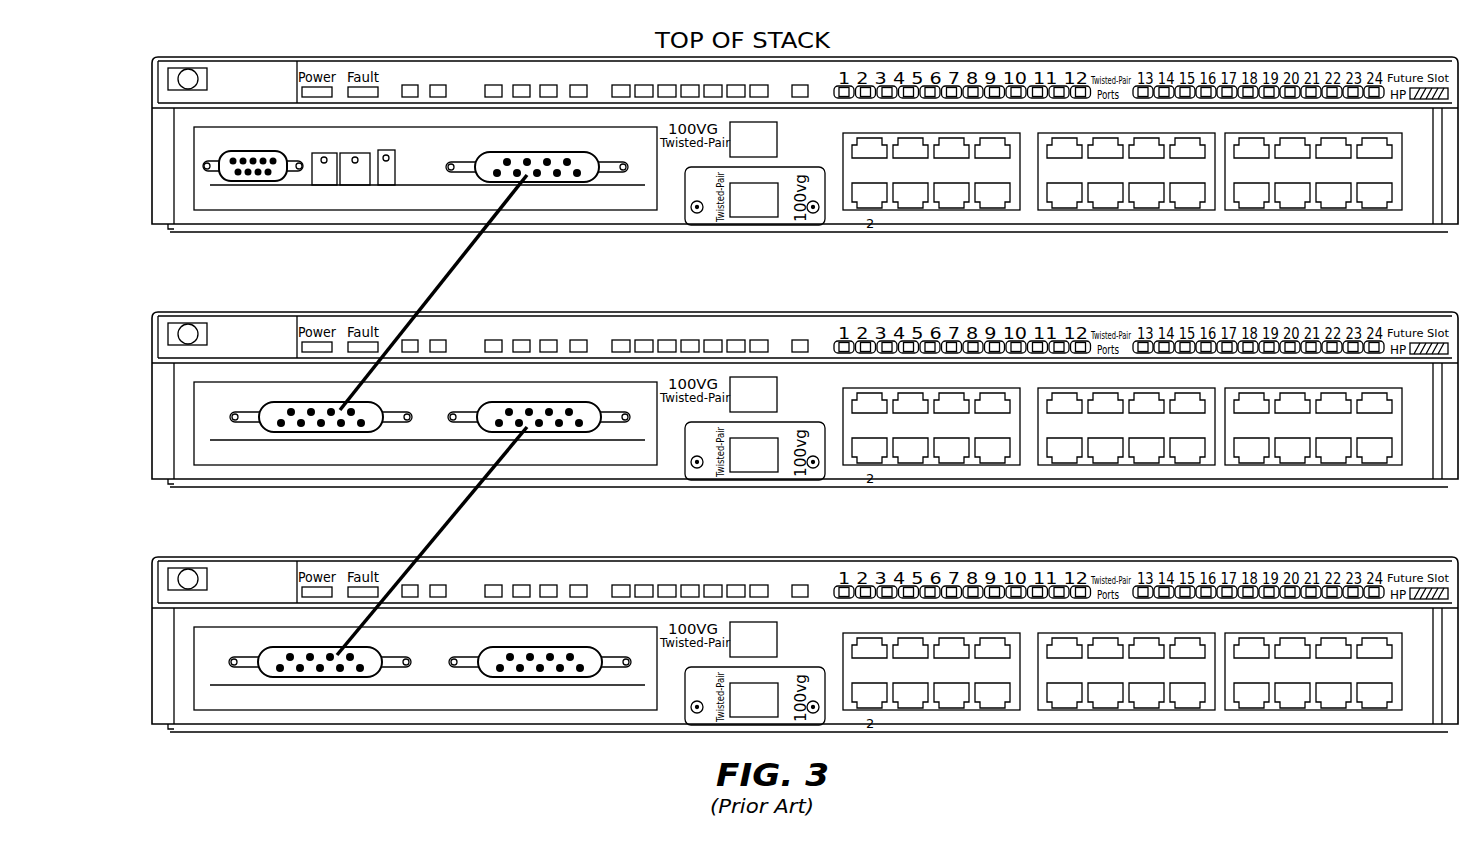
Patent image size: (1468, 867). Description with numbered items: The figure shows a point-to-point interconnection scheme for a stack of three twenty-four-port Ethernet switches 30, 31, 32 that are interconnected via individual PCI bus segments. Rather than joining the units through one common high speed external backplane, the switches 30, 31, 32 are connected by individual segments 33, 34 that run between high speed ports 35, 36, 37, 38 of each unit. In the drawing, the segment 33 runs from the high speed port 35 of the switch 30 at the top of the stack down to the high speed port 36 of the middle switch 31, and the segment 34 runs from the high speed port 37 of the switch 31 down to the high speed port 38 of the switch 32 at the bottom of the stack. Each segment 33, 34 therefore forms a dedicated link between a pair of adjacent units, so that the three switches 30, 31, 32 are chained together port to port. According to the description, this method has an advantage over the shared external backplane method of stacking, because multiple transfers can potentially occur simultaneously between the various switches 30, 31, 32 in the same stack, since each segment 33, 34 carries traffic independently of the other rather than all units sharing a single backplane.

The switch 30 is at (152, 215).
The switch 31 is at (152, 470).
The switch 32 is at (152, 715).
The segment 33 is at (458, 257).
The segment 34 is at (462, 508).
The high speed port 35 is at (577, 163).
The high speed port 36 is at (310, 433).
The high speed port 37 is at (573, 433).
The high speed port 38 is at (332, 678).